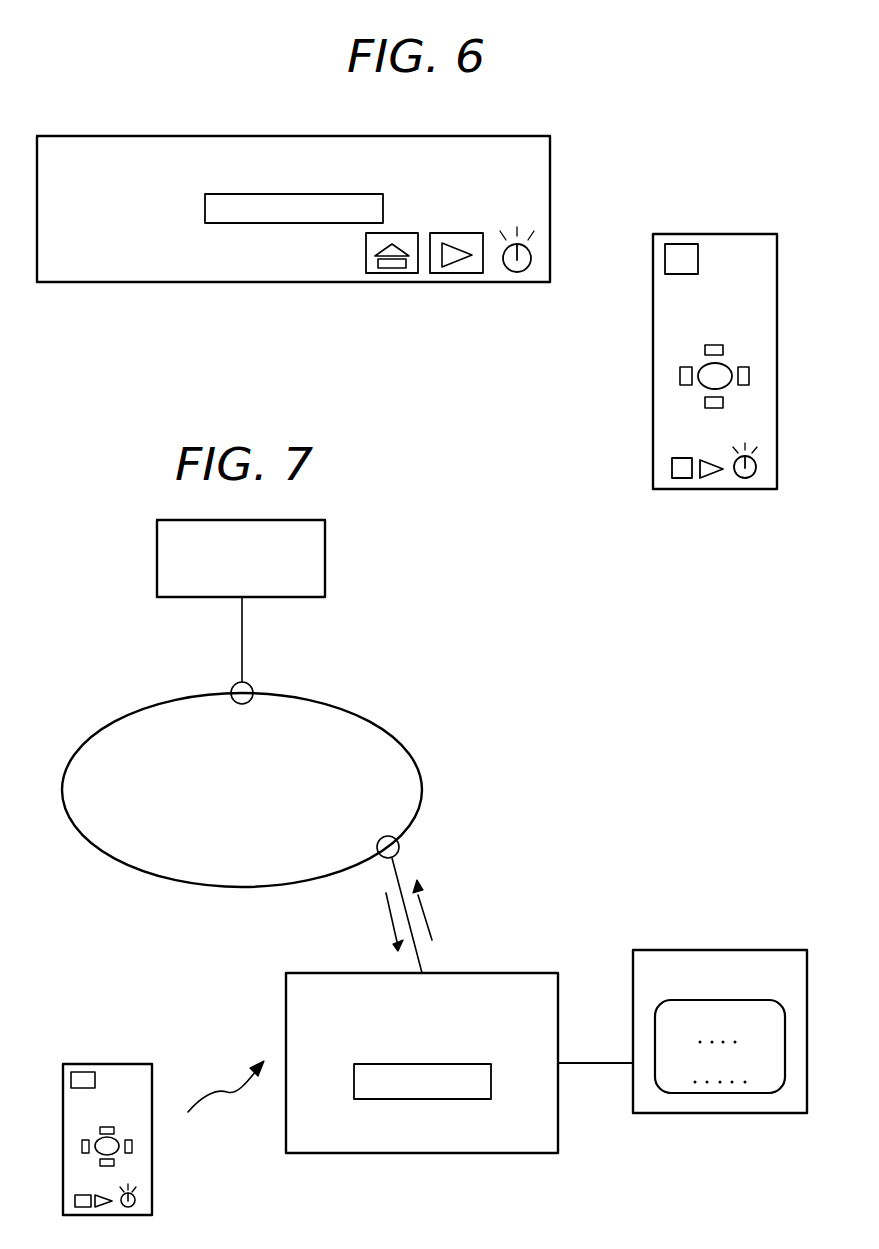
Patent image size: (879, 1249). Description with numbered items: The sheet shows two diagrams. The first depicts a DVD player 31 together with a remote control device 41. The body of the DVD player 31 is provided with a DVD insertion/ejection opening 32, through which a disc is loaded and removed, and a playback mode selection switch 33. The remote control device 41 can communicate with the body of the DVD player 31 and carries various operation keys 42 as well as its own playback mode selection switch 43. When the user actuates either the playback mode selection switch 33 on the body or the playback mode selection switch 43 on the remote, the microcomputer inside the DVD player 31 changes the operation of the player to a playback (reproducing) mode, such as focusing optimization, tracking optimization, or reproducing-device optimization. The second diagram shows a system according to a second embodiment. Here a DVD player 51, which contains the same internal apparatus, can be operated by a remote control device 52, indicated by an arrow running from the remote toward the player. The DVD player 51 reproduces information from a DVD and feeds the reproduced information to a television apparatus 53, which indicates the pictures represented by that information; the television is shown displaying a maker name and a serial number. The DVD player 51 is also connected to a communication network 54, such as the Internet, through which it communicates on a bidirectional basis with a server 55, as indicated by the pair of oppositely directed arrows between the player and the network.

In FIG. 6, the DVD player 31 is at (225, 145).
In FIG. 6, the DVD insertion/ejection opening 32 is at (340, 197).
In FIG. 6, the playback mode selection switch 33 is at (531, 256).
In FIG. 6, the remote control device 41 is at (660, 338).
In FIG. 6, the operation keys 42 is at (723, 365).
In FIG. 6, the playback mode selection switch 43 is at (756, 466).
In FIG. 7, the DVD player 51 is at (377, 1143).
In FIG. 7, the remote control device 52 is at (140, 1155).
In FIG. 7, the television apparatus 53 is at (675, 958).
In FIG. 7, the communication network 54 is at (410, 777).
In FIG. 7, the server 55 is at (327, 555).